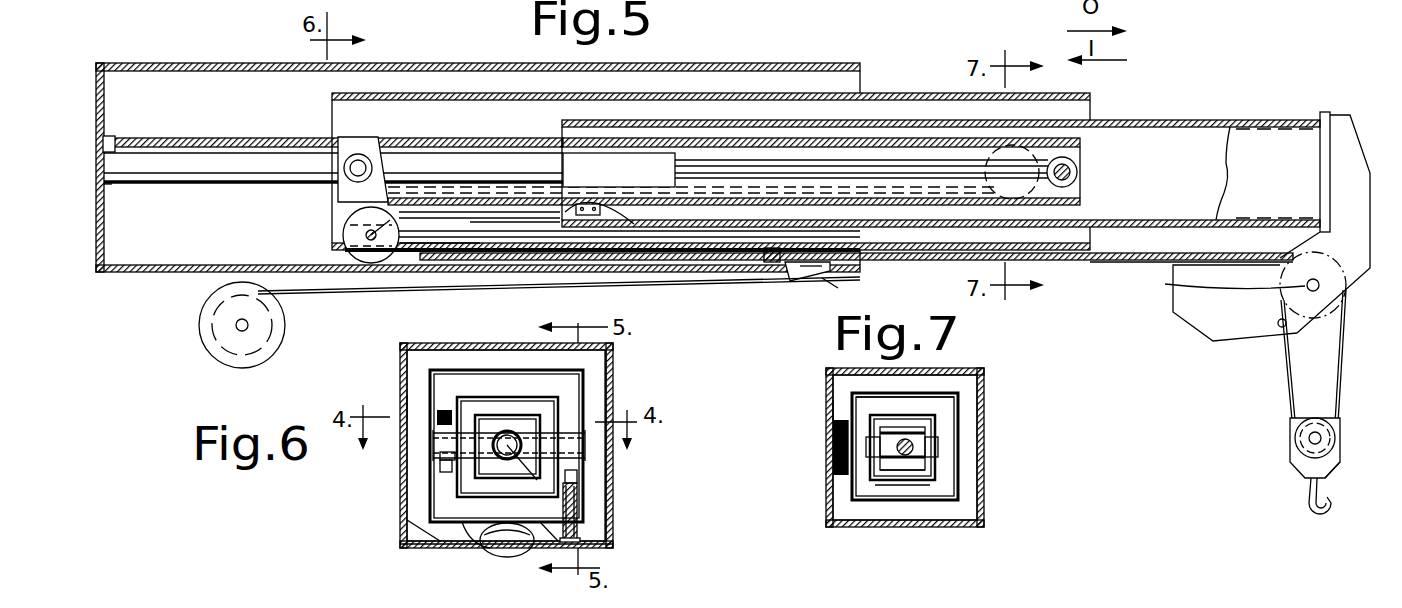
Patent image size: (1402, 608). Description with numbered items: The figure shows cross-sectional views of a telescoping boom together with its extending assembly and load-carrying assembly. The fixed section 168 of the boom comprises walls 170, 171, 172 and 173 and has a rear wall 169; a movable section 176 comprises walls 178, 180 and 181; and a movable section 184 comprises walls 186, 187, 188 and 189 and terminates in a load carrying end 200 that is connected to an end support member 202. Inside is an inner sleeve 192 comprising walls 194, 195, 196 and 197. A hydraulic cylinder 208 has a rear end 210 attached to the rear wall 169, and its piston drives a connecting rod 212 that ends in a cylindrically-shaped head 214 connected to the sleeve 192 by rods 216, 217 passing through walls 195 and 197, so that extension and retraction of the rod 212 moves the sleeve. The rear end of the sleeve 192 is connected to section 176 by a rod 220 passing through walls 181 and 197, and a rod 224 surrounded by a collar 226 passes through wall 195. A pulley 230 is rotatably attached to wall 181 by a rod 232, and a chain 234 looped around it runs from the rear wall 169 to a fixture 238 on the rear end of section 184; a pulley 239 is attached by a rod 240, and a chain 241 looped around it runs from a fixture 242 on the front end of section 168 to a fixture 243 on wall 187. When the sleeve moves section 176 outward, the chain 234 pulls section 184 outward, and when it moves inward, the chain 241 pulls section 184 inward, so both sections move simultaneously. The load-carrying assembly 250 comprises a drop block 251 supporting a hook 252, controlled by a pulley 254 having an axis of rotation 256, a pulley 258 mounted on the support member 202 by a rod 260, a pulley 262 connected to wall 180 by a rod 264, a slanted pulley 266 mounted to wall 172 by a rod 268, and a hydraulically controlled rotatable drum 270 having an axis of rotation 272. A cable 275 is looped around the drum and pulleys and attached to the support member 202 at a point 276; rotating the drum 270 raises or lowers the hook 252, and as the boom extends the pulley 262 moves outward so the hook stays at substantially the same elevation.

In FIG. 5, the fixed section 168 is at (447, 63).
In FIG. 6, the fixed section 168 is at (543, 341).
In FIG. 5, the rear wall 169 is at (97, 72).
In FIG. 6, the wall 170 is at (526, 343).
In FIG. 6, the wall 171 is at (606, 382).
In FIG. 6, the wall 172 is at (590, 552).
In FIG. 6, the wall 173 is at (405, 407).
In FIG. 5, the movable section 176 is at (921, 93).
In FIG. 6, the movable section 176 is at (412, 499).
In FIG. 7, the movable section 176 is at (982, 356).
In FIG. 6, the wall 178 is at (530, 370).
In FIG. 6, the wall 180 is at (420, 549).
In FIG. 6, the wall 181 is at (436, 408).
In FIG. 7, the wall 181 is at (826, 415).
In FIG. 5, the movable section 184 is at (1213, 120).
In FIG. 6, the movable section 184 is at (548, 532).
In FIG. 7, the movable section 184 is at (958, 402).
In FIG. 6, the wall 186 is at (525, 397).
In FIG. 6, the wall 187 is at (570, 400).
In FIG. 6, the wall 188 is at (531, 497).
In FIG. 6, the wall 189 is at (452, 382).
In FIG. 5, the inner sleeve 192 is at (492, 134).
In FIG. 7, the inner sleeve 192 is at (886, 490).
In FIG. 7, the wall 194 is at (918, 412).
In FIG. 7, the wall 195 is at (940, 470).
In FIG. 7, the wall 196 is at (913, 483).
In FIG. 7, the wall 197 is at (870, 470).
In FIG. 5, the load carrying end 200 is at (1298, 108).
In FIG. 5, the end support member 202 is at (1214, 340).
In FIG. 5, the hydraulic cylinder 208 is at (298, 186).
In FIG. 6, the hydraulic cylinder 208 is at (506, 480).
In FIG. 5, the rear end 210 is at (115, 186).
In FIG. 5, the connecting rod 212 is at (851, 162).
In FIG. 7, the connecting rod 212 is at (927, 465).
In FIG. 5, the cylindrically-shaped head 214 is at (1080, 165).
In FIG. 7, the cylindrically-shaped head 214 is at (935, 428).
In FIG. 7, the rod 216 is at (940, 447).
In FIG. 7, the rod 217 is at (866, 443).
In FIG. 6, the rod 220 is at (433, 442).
In FIG. 6, the rod 224 is at (588, 445).
In FIG. 6, the collar 226 is at (584, 400).
In FIG. 5, the pulley 230 is at (1082, 185).
In FIG. 6, the pulley 230 is at (438, 415).
In FIG. 7, the pulley 230 is at (833, 435).
In FIG. 7, the rod 232 is at (833, 448).
In FIG. 5, the chain 234 is at (249, 140).
In FIG. 5, the fixture 238 is at (563, 180).
In FIG. 6, the fixture 238 is at (447, 466).
In FIG. 5, the pulley 239 is at (343, 234).
In FIG. 6, the pulley 239 is at (578, 493).
In FIG. 5, the rod 240 is at (397, 228).
In FIG. 6, the rod 240 is at (578, 508).
In FIG. 5, the chain 241 is at (513, 214).
In FIG. 5, the fixture 242 is at (774, 252).
In FIG. 6, the fixture 242 is at (582, 540).
In FIG. 5, the fixture 243 is at (617, 227).
In FIG. 6, the fixture 243 is at (577, 474).
In FIG. 5, the load-carrying assembly 250 is at (1232, 372).
In FIG. 5, the drop block 251 is at (1278, 468).
In FIG. 5, the hook 252 is at (1313, 530).
In FIG. 5, the pulley 254 is at (1297, 400).
In FIG. 5, the axis of rotation 256 is at (1310, 440).
In FIG. 5, the pulley 258 is at (1282, 298).
In FIG. 5, the rod 260 is at (1165, 284).
In FIG. 5, the pulley 262 is at (346, 251).
In FIG. 6, the pulley 262 is at (458, 548).
In FIG. 5, the rod 264 is at (432, 246).
In FIG. 5, the slanted pulley 266 is at (792, 282).
In FIG. 6, the slanted pulley 266 is at (500, 557).
In FIG. 5, the rod 268 is at (839, 288).
In FIG. 5, the rotatable drum 270 is at (199, 325).
In FIG. 5, the axis of rotation 272 is at (240, 329).
In FIG. 5, the cable 275 is at (455, 293).
In FIG. 5, the point 276 is at (1277, 324).